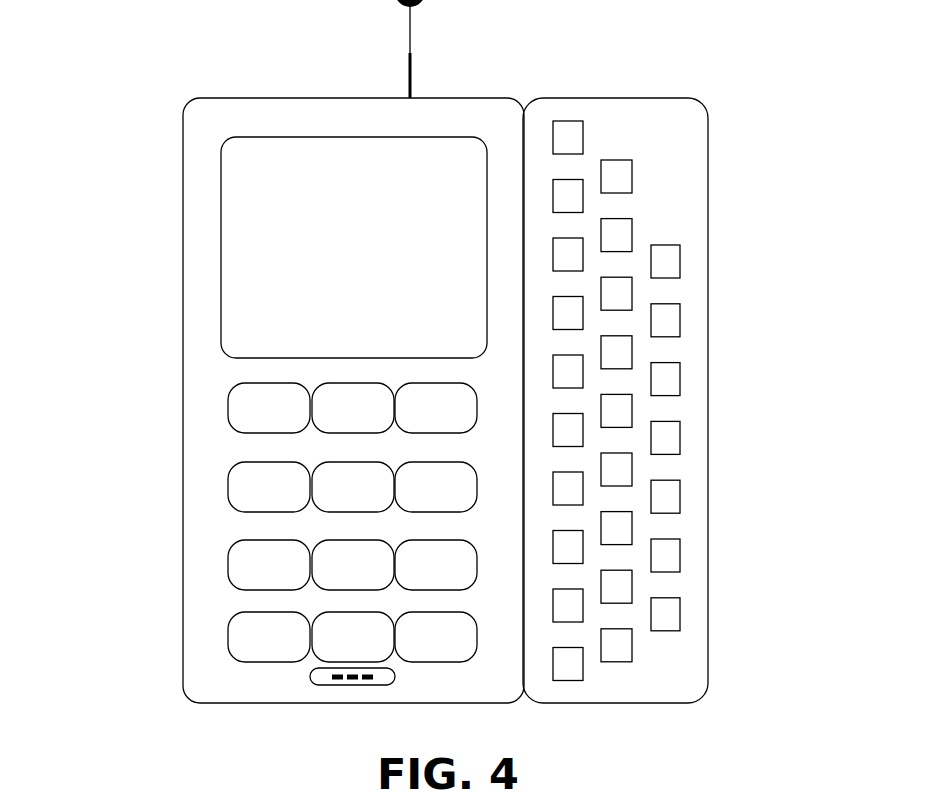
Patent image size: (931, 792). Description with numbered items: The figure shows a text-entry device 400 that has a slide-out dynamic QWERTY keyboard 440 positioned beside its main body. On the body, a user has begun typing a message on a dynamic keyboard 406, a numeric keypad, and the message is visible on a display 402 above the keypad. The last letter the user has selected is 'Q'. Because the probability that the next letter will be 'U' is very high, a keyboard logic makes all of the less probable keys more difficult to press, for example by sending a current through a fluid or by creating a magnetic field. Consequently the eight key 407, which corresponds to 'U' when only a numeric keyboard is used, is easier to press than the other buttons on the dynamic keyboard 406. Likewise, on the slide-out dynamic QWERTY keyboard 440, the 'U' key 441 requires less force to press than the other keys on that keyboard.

The text-entry device 400 is at (470, 98).
The display 402 is at (333, 137).
The dynamic keyboard 406 is at (227, 565).
The '8' key 407 is at (317, 542).
The slide-out dynamic QWERTY keyboard 440 is at (635, 98).
The 'U' key 441 is at (580, 297).